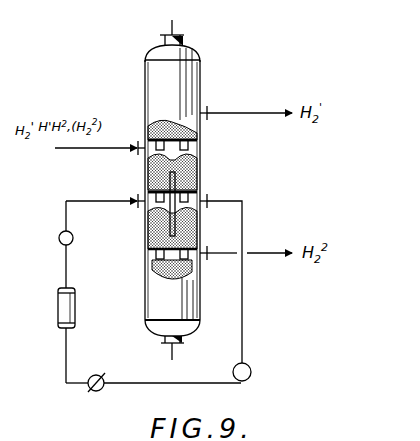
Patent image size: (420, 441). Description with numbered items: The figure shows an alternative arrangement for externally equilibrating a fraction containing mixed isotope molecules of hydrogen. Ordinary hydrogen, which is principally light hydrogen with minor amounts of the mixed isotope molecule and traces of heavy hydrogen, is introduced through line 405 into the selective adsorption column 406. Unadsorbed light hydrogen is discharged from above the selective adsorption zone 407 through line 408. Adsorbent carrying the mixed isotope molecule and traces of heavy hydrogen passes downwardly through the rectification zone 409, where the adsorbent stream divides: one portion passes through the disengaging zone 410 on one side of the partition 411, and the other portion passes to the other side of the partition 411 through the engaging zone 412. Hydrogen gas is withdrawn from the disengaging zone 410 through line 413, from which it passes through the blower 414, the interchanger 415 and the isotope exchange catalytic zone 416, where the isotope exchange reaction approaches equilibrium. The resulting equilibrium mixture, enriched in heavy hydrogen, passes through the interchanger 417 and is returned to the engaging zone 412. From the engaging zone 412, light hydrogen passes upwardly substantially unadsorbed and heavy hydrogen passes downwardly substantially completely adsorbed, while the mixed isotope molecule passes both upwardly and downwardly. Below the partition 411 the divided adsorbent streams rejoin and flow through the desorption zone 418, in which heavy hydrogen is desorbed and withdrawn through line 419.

The line 405 is at (58, 150).
The selective adsorption column 406 is at (183, 52).
The selective adsorption zone 407 is at (182, 118).
The line 408 is at (238, 113).
The rectification zone 409 is at (200, 152).
The disengaging zone 410 is at (202, 193).
The partition 411 is at (194, 226).
The engaging zone 412 is at (152, 213).
The line 413 is at (243, 222).
The blower 414 is at (246, 372).
The interchanger 415 is at (96, 392).
The isotope exchange catalytic zone 416 is at (64, 312).
The interchanger 417 is at (58, 246).
The desorption zone 418 is at (152, 270).
The line 419 is at (278, 256).